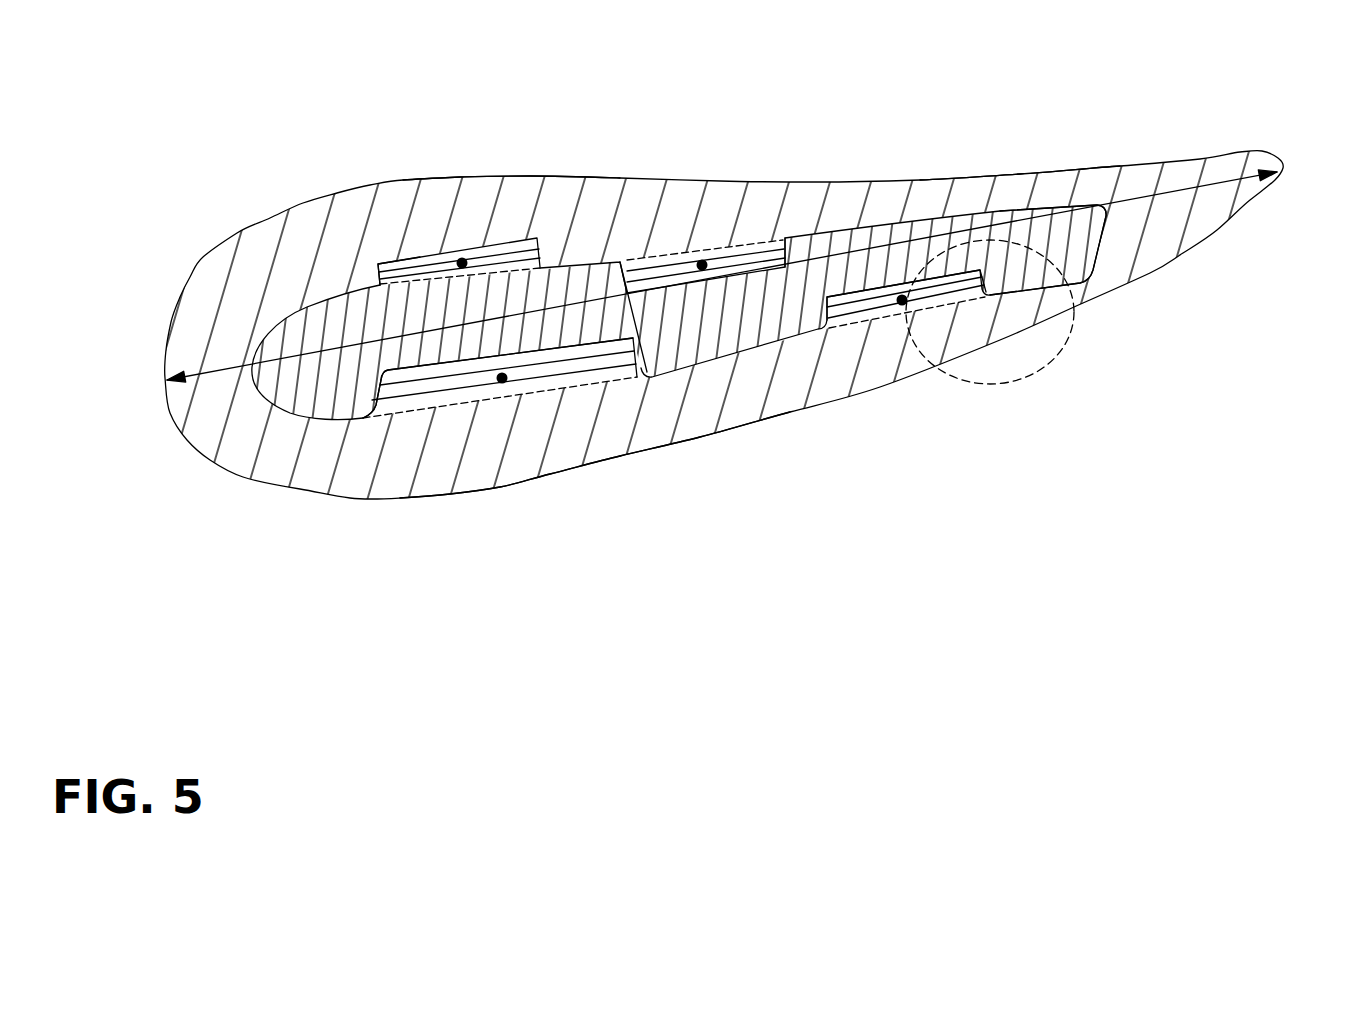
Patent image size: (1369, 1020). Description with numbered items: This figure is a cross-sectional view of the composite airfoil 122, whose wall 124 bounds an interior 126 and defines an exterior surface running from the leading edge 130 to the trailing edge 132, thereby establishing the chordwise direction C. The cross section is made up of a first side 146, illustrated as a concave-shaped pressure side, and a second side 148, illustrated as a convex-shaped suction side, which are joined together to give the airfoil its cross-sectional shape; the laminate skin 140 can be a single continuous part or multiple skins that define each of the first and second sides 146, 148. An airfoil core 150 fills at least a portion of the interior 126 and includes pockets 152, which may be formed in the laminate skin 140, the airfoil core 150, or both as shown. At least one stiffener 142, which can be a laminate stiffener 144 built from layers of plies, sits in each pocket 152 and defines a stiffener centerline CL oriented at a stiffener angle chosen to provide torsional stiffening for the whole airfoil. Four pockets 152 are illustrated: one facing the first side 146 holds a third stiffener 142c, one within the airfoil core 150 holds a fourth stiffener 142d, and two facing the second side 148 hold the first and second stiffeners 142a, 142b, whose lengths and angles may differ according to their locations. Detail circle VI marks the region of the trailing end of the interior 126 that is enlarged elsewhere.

The composite airfoil 122 is at (365, 170).
The wall 124 is at (517, 200).
The first side 146 is at (961, 180).
The second side 148 is at (708, 437).
The laminate skin 140 is at (533, 453).
The airfoil core 150 is at (797, 308).
The interior 126 is at (1075, 242).
The pocket 152 is at (430, 250).
The stiffener 142 is at (696, 322).
The first stiffener 142a is at (540, 377).
The second stiffener 142b is at (872, 305).
The third stiffener 142c is at (737, 260).
The fourth stiffener 142d is at (522, 247).
The laminate stiffener 144 is at (928, 369).
The leading edge 130 is at (166, 384).
The trailing edge 132 is at (1285, 162).
The chordwise direction C is at (485, 322).
The stiffener centerline CL is at (700, 256).
The detail view circle VI is at (1060, 353).